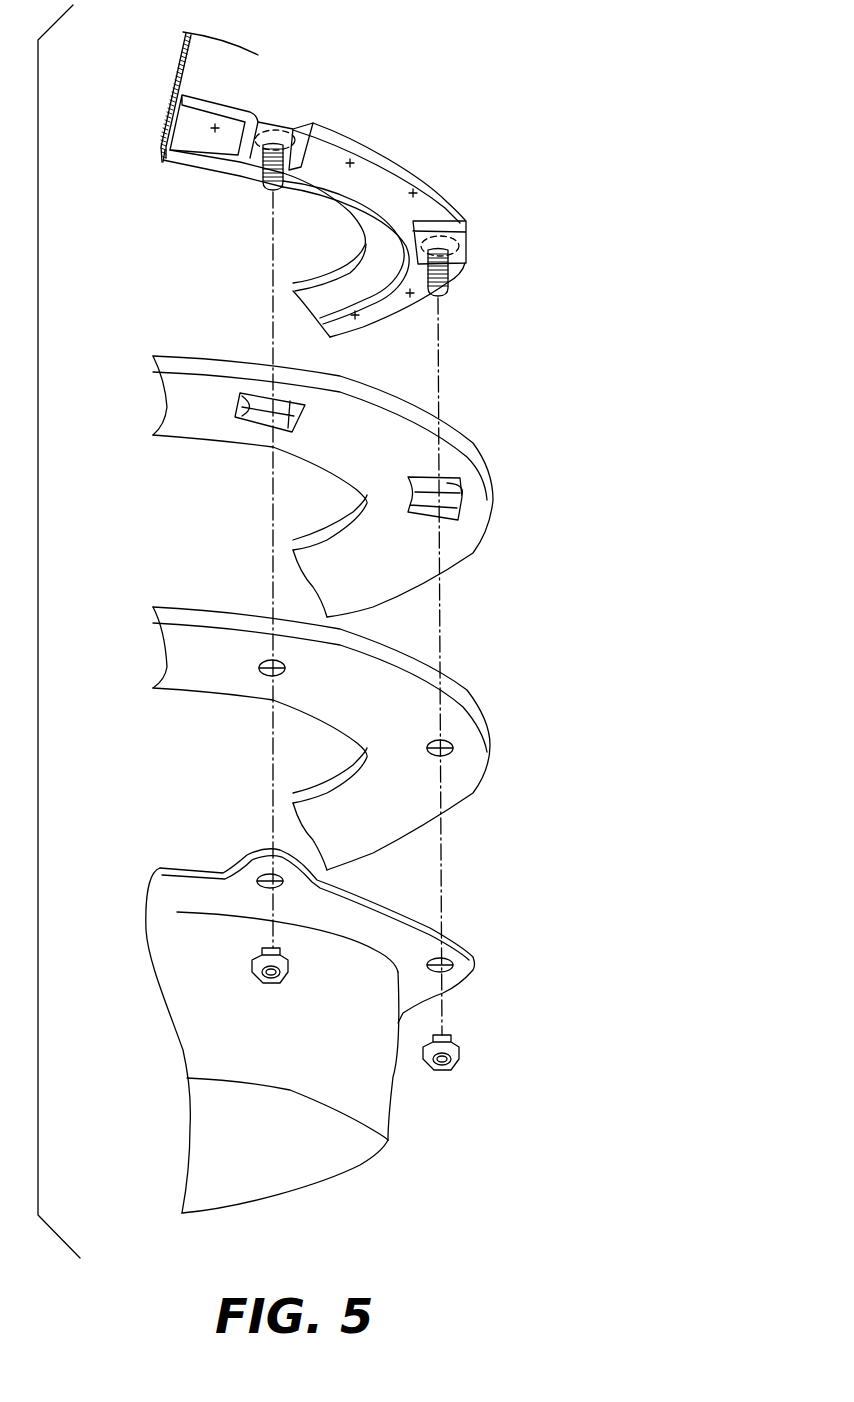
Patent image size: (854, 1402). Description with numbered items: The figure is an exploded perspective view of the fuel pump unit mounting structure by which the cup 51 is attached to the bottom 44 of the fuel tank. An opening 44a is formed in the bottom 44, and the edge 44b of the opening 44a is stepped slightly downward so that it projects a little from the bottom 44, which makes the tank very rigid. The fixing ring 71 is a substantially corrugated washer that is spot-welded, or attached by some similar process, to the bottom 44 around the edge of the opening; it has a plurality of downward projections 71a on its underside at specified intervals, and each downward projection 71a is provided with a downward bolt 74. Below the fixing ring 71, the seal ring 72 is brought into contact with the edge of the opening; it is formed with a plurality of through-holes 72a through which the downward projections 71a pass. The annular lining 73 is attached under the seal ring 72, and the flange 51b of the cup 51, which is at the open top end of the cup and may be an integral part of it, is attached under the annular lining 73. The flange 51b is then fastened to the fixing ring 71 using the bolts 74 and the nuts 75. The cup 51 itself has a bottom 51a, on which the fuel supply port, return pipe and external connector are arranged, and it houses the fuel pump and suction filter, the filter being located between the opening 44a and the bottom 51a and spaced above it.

The bottom of the fuel tank 44 is at (228, 78).
The opening 44a is at (183, 165).
The edge of the opening 44b is at (220, 167).
The fixing ring 71 is at (388, 170).
The downward projections 71a is at (252, 172).
The bolts 74 is at (280, 190).
The seal ring 72 is at (430, 455).
The through-holes 72a is at (240, 427).
The annular lining 73 is at (447, 708).
The cup 51 is at (368, 1090).
The bottom of the cup 51a is at (337, 1155).
The flange 51b is at (397, 933).
The nuts 75 is at (267, 982).